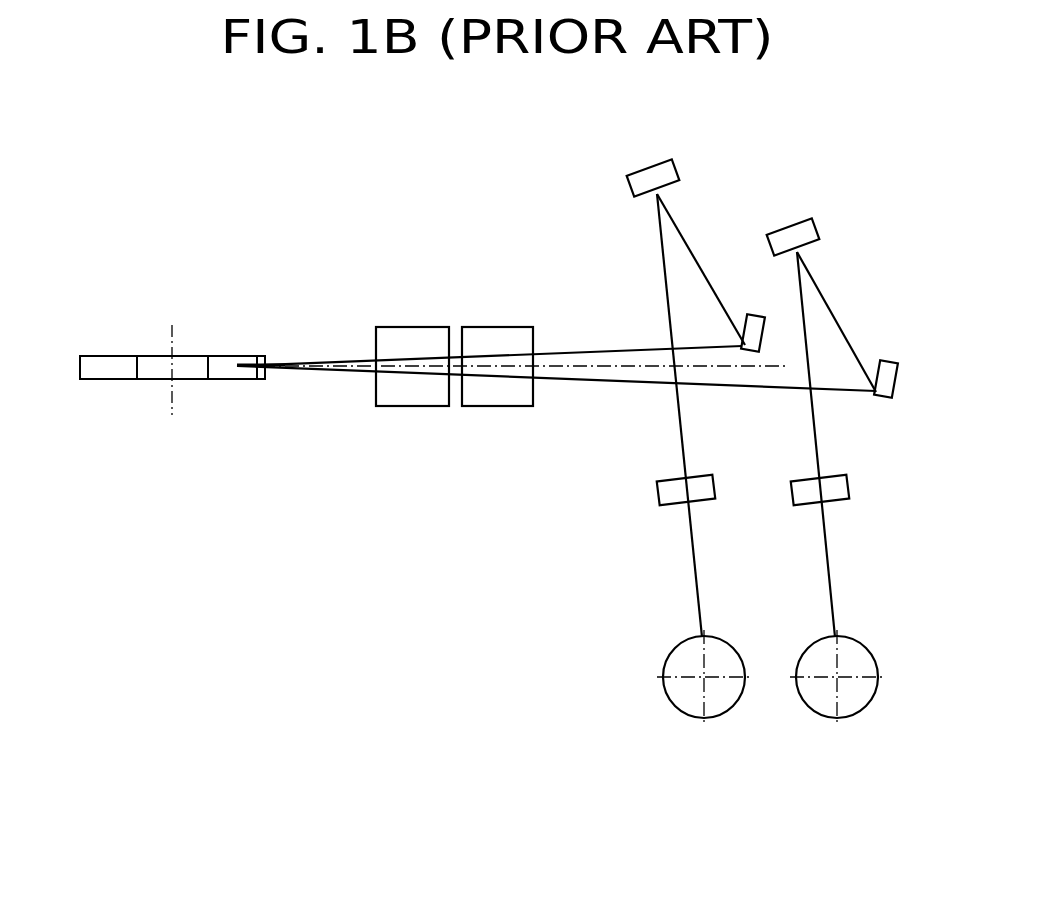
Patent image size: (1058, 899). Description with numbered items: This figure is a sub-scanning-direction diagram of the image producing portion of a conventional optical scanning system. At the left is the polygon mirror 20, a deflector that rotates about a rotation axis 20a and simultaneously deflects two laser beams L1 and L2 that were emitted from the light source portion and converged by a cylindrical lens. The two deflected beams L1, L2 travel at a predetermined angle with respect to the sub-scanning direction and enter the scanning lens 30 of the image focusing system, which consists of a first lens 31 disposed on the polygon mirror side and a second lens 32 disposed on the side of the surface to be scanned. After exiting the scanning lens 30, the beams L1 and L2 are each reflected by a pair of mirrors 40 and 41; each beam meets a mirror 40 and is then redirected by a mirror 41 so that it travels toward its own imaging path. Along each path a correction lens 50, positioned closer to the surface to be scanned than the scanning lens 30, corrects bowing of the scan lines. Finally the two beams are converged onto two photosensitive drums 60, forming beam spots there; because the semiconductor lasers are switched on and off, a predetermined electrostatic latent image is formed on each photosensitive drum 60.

The polygon mirror 20 is at (108, 380).
The rotation axis 20a is at (172, 398).
The scanning lens 30 is at (454, 416).
The first lens 31 is at (412, 398).
The second lens 32 is at (497, 393).
The mirror 40 is at (752, 320).
The mirror 41 is at (652, 172).
The correction lens 50 is at (660, 490).
The photosensitive drum 60 is at (678, 648).
The beam L1 is at (615, 385).
The beam L2 is at (600, 348).